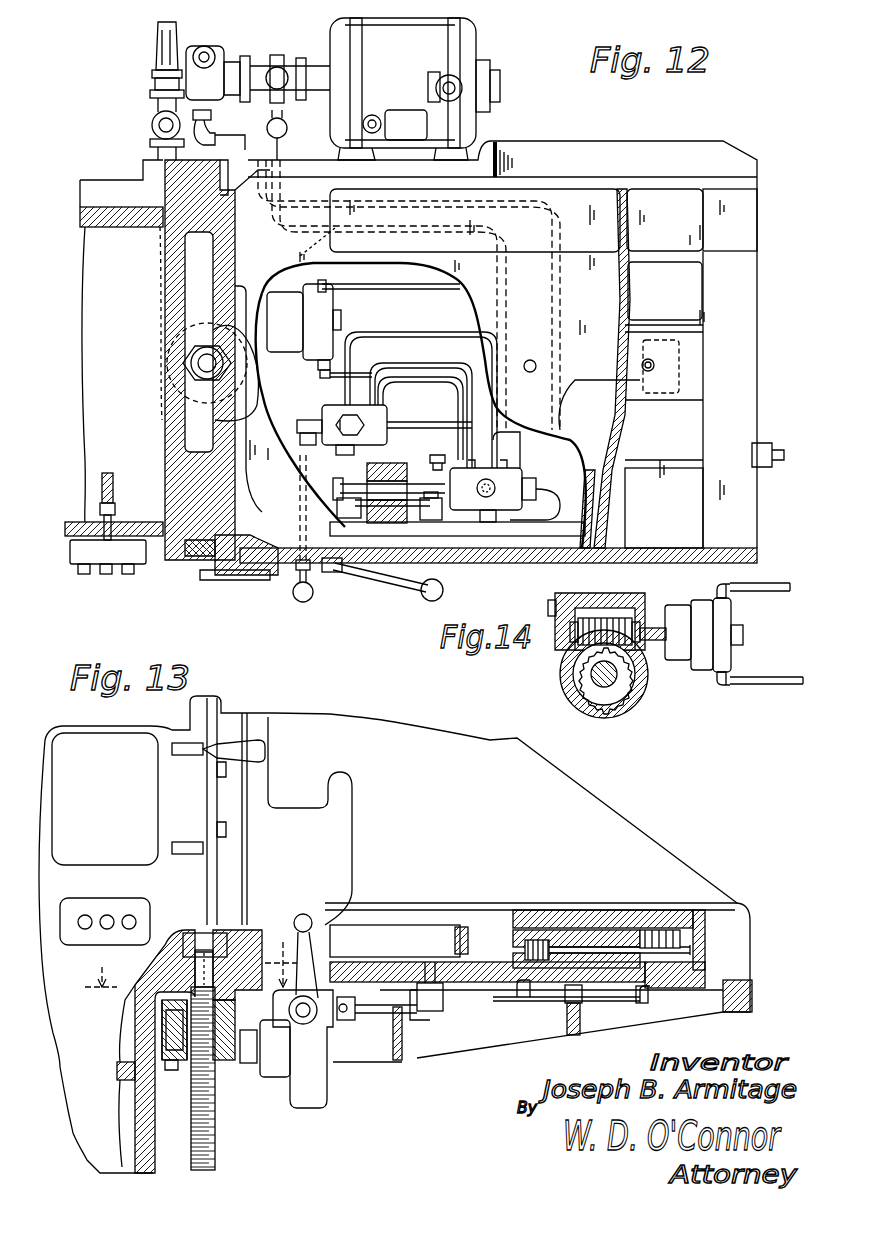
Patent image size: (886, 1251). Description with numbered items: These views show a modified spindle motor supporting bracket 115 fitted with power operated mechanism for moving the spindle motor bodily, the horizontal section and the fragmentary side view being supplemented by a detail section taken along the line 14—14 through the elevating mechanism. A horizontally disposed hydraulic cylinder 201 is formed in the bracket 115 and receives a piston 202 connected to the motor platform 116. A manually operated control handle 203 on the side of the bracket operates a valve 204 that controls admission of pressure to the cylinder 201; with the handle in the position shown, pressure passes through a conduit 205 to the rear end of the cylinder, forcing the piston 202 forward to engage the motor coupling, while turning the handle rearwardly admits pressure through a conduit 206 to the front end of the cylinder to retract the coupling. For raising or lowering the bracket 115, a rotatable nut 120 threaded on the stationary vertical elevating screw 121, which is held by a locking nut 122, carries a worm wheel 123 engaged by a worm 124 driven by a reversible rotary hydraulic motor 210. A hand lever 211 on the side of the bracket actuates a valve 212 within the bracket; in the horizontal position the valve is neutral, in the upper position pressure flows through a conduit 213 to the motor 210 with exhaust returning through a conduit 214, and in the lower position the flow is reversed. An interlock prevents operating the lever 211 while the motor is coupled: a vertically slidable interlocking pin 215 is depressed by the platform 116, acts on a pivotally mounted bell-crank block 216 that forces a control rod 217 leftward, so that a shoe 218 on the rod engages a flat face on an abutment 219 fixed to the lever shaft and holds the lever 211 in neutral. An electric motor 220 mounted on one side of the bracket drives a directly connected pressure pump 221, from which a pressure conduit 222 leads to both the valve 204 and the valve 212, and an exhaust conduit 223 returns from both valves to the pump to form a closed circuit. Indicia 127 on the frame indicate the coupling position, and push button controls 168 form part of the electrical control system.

In FIG. 12, the bracket 115 is at (636, 150).
In FIG. 13, the bracket 115 is at (705, 888).
In FIG. 12, the motor platform 116 is at (635, 283).
In FIG. 13, the motor platform 116 is at (603, 912).
In FIG. 14, the rotatable nut 120 is at (580, 688).
In FIG. 13, the rotatable nut 120 is at (186, 1070).
In FIG. 14, the elevating screw 121 is at (594, 674).
In FIG. 13, the elevating screw 121 is at (216, 1120).
In FIG. 12, the locking nut 122 is at (207, 383).
In FIG. 13, the locking nut 122 is at (195, 935).
In FIG. 14, the worm wheel 123 is at (595, 710).
In FIG. 14, the worm 124 is at (600, 618).
In FIG. 13, the indicia 127 is at (183, 840).
In FIG. 12, the push button controls 168 is at (132, 574).
In FIG. 13, the push button controls 168 is at (129, 915).
In FIG. 12, the hydraulic cylinder 201 is at (606, 385).
In FIG. 13, the hydraulic cylinder 201 is at (560, 930).
In FIG. 13, the piston 202 is at (565, 995).
In FIG. 12, the control handle 203 is at (292, 592).
In FIG. 13, the control handle 203 is at (303, 913).
In FIG. 12, the valve 204 is at (322, 412).
In FIG. 12, the conduit 205 is at (426, 336).
In FIG. 13, the conduit 205 is at (606, 1001).
In FIG. 12, the conduit 206 is at (440, 368).
In FIG. 13, the conduit 206 is at (500, 1001).
In FIG. 12, the hydraulic motor 210 is at (300, 350).
In FIG. 14, the hydraulic motor 210 is at (678, 612).
In FIG. 12, the hand lever 211 is at (420, 595).
In FIG. 12, the valve 212 is at (474, 505).
In FIG. 12, the conduit 213 is at (437, 378).
In FIG. 14, the conduit 213 is at (785, 678).
In FIG. 12, the conduit 214 is at (412, 286).
In FIG. 14, the conduit 214 is at (785, 584).
In FIG. 12, the interlocking pin 215 is at (428, 492).
In FIG. 13, the interlocking pin 215 is at (430, 960).
In FIG. 12, the block 216 is at (484, 478).
In FIG. 13, the block 216 is at (443, 1003).
In FIG. 12, the control rod 217 is at (415, 520).
In FIG. 13, the control rod 217 is at (420, 1012).
In FIG. 12, the shoe 218 is at (350, 518).
In FIG. 13, the shoe 218 is at (372, 1005).
In FIG. 12, the abutment 219 is at (340, 498).
In FIG. 13, the abutment 219 is at (348, 1021).
In FIG. 12, the electric motor 220 is at (480, 32).
In FIG. 12, the pressure pump 221 is at (262, 60).
In FIG. 12, the pressure conduit 222 is at (401, 295).
In FIG. 12, the exhaust conduit 223 is at (448, 422).
In FIG. 13, the section line 14— 14 is at (191, 955).